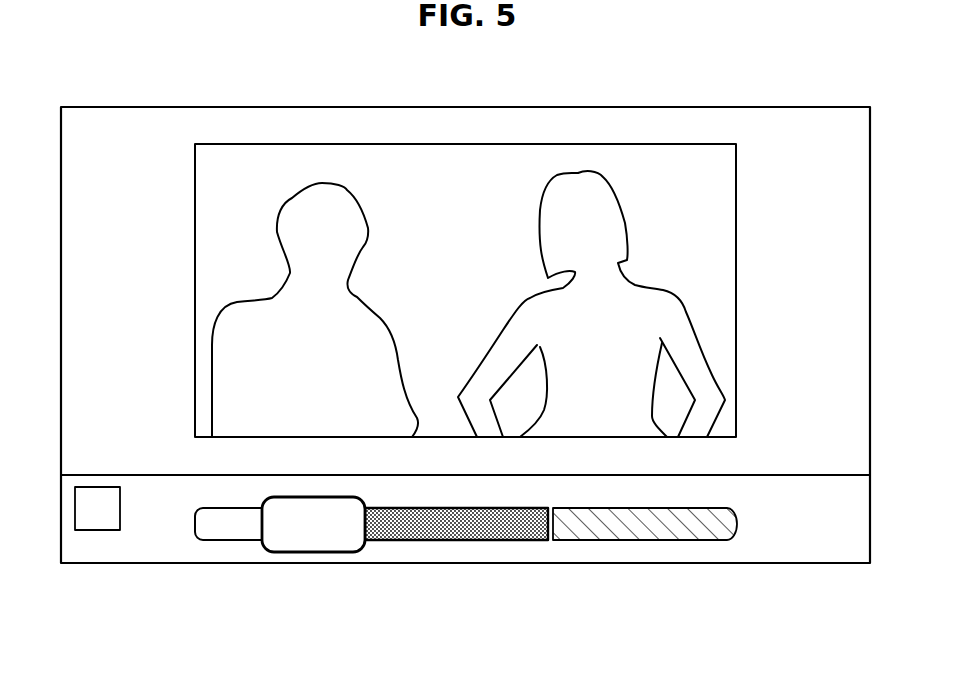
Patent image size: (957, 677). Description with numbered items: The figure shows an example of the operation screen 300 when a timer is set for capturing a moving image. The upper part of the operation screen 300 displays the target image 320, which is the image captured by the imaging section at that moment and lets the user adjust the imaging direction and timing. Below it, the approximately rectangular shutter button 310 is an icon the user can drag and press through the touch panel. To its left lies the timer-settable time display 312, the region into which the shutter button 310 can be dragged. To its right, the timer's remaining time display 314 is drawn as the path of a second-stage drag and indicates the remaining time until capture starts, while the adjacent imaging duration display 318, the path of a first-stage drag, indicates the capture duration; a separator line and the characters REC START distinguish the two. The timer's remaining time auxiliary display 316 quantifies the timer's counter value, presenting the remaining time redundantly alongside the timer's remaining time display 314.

The operation screen 300 is at (737, 107).
The target image 320 is at (465, 144).
The timer's remaining time auxiliary display 316 is at (97, 530).
The timer-settable time display 312 is at (237, 541).
The shutter button 310 is at (315, 553).
The timer's remaining time display 314 is at (486, 541).
The imaging duration display 318 is at (642, 541).